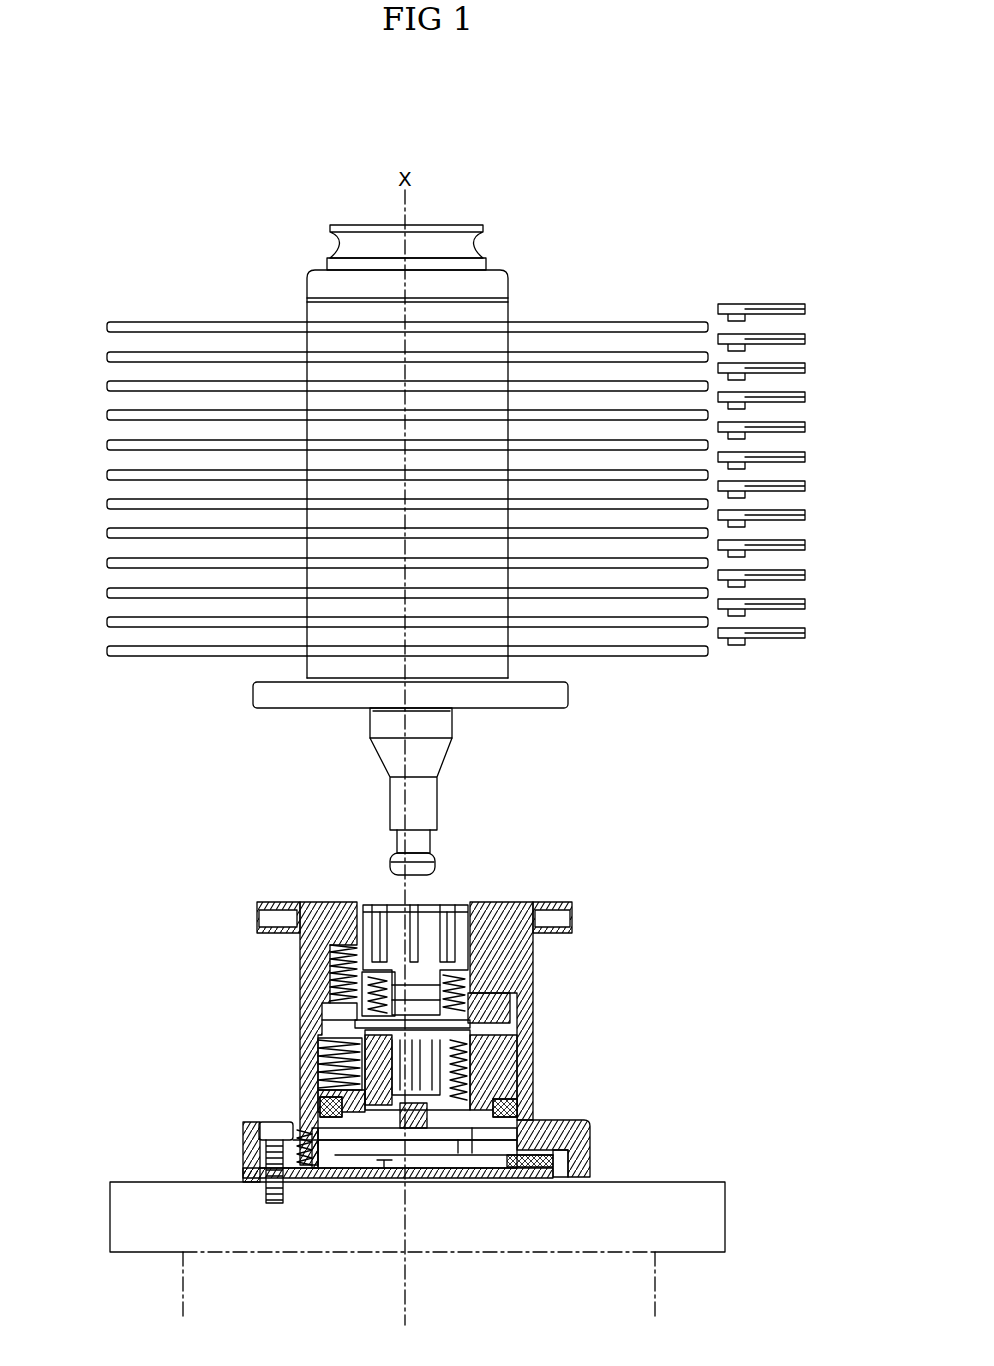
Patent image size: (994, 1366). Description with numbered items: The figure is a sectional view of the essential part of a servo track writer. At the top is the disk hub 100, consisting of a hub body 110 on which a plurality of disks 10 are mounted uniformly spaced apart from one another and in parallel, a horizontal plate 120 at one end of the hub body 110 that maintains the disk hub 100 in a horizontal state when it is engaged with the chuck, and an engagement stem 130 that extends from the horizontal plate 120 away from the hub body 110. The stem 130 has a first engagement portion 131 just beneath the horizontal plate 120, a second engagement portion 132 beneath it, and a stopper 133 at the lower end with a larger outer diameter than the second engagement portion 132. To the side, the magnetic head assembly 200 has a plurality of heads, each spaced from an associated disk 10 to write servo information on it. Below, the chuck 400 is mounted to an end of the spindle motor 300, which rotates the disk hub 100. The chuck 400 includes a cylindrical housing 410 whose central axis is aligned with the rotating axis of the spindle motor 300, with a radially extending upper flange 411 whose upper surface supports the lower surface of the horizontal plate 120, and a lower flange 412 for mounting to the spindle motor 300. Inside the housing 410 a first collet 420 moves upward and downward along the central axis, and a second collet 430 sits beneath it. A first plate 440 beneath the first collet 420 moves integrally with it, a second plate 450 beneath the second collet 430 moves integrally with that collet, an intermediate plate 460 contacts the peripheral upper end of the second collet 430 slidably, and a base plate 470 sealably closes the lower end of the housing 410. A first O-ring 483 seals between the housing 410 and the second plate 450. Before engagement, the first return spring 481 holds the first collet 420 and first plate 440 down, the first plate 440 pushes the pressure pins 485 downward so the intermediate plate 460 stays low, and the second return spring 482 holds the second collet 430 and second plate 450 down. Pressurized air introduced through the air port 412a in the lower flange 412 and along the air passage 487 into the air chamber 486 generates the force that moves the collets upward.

The disk 10 is at (127, 323).
The disk hub 100 is at (298, 222).
The hub body 110 is at (508, 312).
The horizontal plate 120 is at (568, 695).
The engagement stem 130 is at (462, 758).
The first engagement portion 131 is at (370, 727).
The second engagement portion 132 is at (397, 840).
The stopper 133 is at (392, 862).
The magnetic head assembly 200 is at (729, 290).
The spindle motor 300 is at (153, 1281).
The chuck 400 is at (202, 934).
The cylindrical housing 410 is at (526, 950).
The upper flange 411 is at (548, 903).
The lower flange 412 is at (590, 1138).
The air port 412a is at (557, 1183).
The first collet 420 is at (462, 968).
The second collet 430 is at (435, 1140).
The first plate 440 is at (465, 1020).
The second plate 450 is at (473, 1183).
The intermediate plate 460 is at (522, 1058).
The base plate 470 is at (352, 1183).
The first return spring 481 is at (322, 968).
The second return spring 482 is at (300, 1052).
The first O-ring 483 is at (300, 1120).
The pressure pin 485 is at (528, 1068).
The air chamber 486 is at (382, 1183).
The air passage 487 is at (522, 1183).